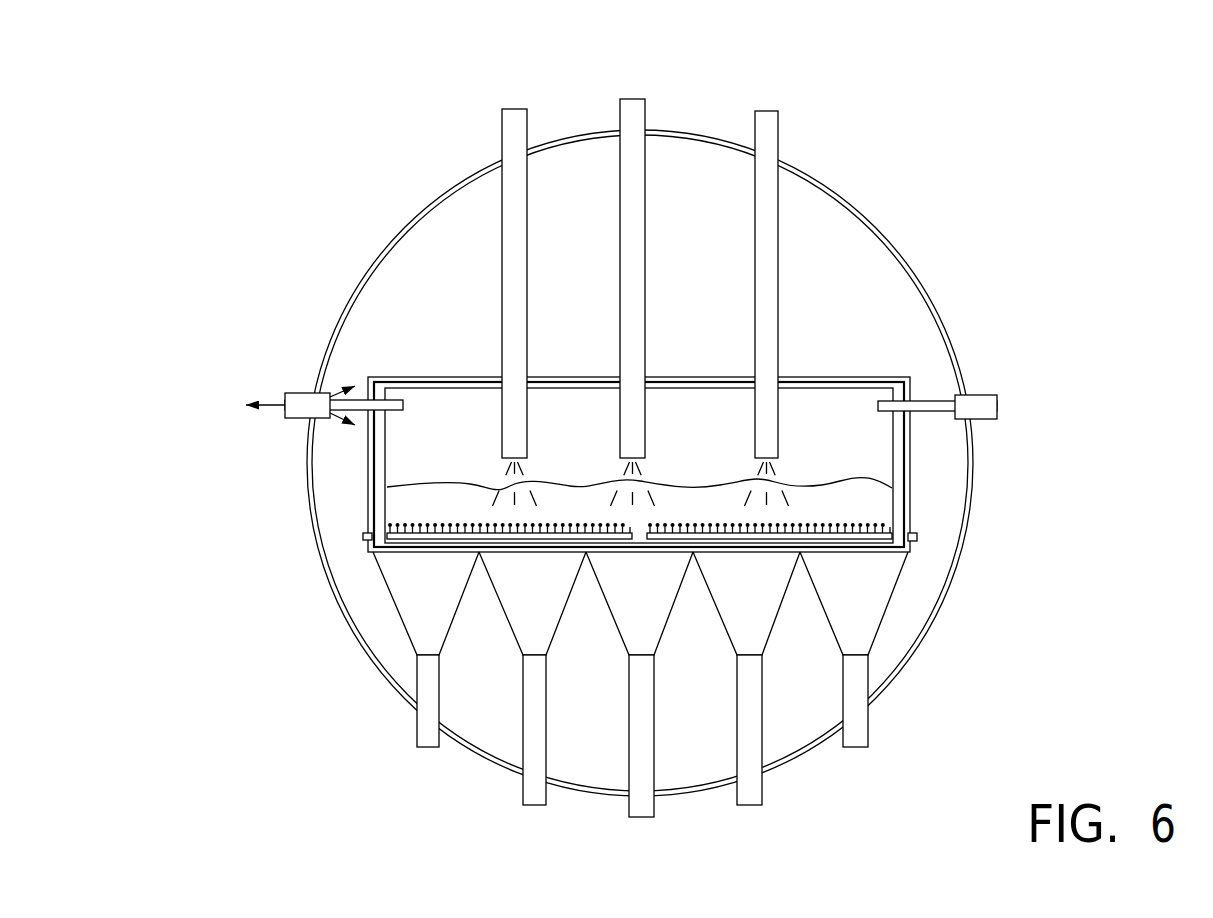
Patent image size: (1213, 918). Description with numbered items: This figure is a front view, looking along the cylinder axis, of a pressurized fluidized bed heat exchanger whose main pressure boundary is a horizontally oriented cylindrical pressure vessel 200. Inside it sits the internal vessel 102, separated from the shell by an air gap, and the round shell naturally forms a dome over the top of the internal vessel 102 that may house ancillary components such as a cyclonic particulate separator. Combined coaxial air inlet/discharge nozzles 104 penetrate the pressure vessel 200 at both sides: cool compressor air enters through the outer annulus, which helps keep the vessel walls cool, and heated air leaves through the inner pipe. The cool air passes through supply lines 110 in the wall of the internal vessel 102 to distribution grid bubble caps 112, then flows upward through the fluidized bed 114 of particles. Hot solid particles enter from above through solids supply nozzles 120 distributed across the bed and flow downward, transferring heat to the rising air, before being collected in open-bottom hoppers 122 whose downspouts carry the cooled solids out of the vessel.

The horizontally oriented cylindrical pressure vessel 200 is at (442, 193).
The internal vessel 102 is at (436, 374).
The coaxial pipe nozzle 104 is at (290, 389).
The supply line 110 is at (358, 535).
The distribution grid bubble cap 112 is at (446, 513).
The fluidized bed 114 is at (810, 486).
The solids supply nozzle 120 is at (502, 138).
The hopper 122 is at (381, 563).